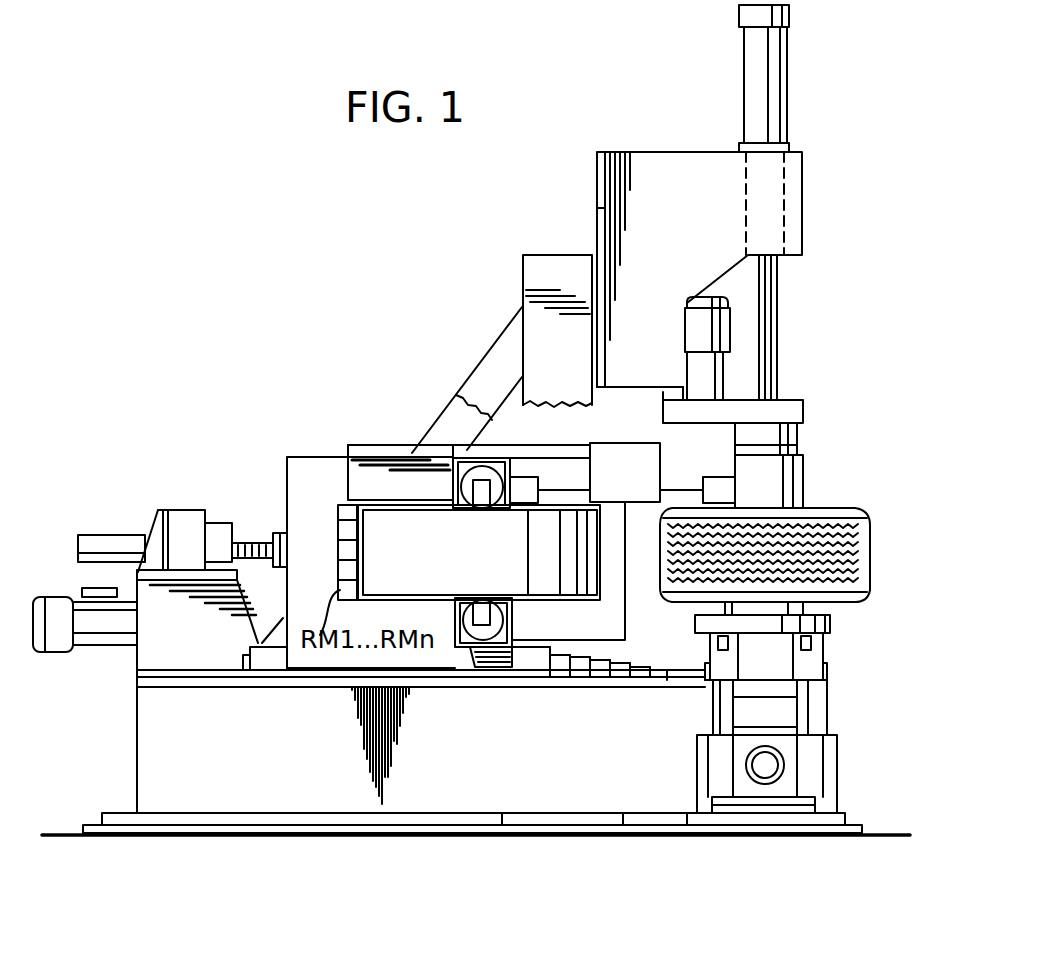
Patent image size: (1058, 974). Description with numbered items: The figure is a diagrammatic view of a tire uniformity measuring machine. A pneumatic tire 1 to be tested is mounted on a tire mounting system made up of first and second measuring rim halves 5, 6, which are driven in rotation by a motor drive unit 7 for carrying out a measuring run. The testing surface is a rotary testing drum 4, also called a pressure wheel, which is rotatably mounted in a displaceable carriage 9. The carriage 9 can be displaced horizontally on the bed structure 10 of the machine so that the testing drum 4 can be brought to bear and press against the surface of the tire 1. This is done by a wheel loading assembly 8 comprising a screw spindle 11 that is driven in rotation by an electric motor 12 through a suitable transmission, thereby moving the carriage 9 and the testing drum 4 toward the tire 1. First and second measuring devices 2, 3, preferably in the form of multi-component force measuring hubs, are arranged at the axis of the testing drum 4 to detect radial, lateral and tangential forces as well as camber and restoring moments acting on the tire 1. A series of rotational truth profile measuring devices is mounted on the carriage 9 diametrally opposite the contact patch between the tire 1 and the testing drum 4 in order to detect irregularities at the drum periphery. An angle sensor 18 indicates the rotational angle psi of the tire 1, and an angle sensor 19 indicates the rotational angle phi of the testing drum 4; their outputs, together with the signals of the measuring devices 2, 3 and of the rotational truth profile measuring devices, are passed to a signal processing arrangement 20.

The tire 1 is at (850, 535).
The first measuring device 2 is at (465, 455).
The second measuring device 3 is at (482, 675).
The rotary testing drum 4 is at (543, 563).
The first measuring rim half 5 is at (795, 606).
The second measuring rim half 6 is at (790, 487).
The motor drive unit 7 is at (718, 335).
The wheel loading assembly 8 is at (180, 642).
The displaceable carriage 9 is at (310, 475).
The bed structure 10 is at (470, 790).
The screw spindle 11 is at (265, 530).
The electric motor 12 is at (60, 642).
The angle sensor 18 is at (712, 477).
The angle sensor 19 is at (537, 472).
The signal processing arrangement 20 is at (625, 475).